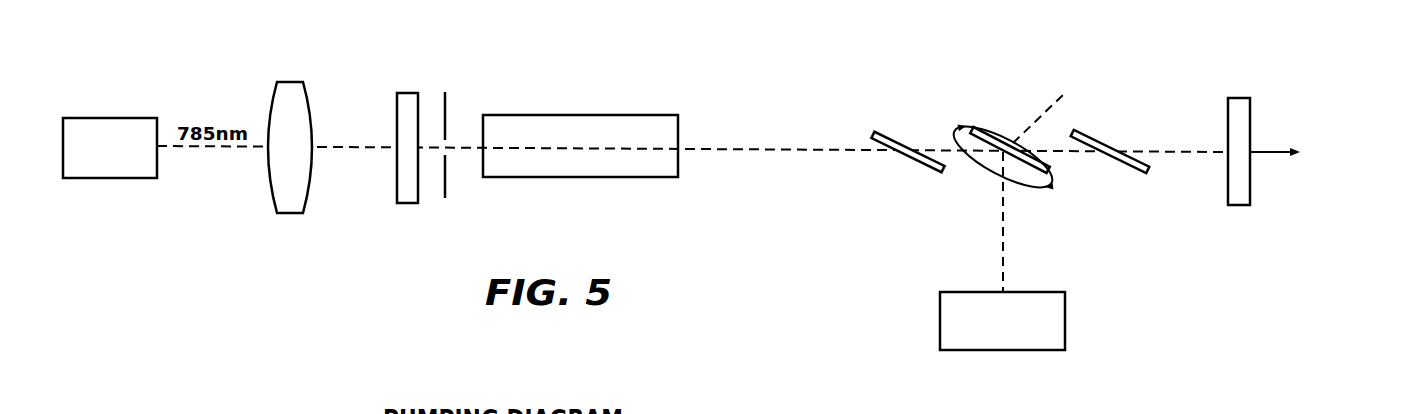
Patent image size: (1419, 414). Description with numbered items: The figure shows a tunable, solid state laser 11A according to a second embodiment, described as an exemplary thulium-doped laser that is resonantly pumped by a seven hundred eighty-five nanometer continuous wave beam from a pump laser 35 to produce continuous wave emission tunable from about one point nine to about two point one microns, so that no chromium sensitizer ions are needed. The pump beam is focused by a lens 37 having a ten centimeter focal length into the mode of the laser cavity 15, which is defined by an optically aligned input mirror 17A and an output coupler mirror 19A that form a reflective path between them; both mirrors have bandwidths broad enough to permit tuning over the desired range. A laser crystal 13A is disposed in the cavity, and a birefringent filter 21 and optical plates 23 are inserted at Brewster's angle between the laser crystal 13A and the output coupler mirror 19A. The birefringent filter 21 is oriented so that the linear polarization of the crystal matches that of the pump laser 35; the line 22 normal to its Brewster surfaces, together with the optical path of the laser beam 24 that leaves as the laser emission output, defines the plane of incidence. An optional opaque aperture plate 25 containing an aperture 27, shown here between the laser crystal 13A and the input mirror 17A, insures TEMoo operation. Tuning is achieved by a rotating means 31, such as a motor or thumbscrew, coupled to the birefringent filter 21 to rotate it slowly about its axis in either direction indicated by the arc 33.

The tunable solid state laser 11A is at (810, 31).
The laser crystal 13A is at (661, 115).
The laser cavity 15 is at (835, 101).
The input mirror 17A is at (405, 93).
The output coupler mirror 19A is at (1240, 98).
The birefringent filter 21 is at (994, 130).
The line normal to Brewster surfaces 22 is at (1058, 101).
The optical plates 23 is at (909, 164).
The laser beam 24 is at (1195, 149).
The aperture plate 25 is at (446, 98).
The aperture 27 is at (451, 160).
The rotating means 31 is at (1065, 317).
The arc 33 is at (1035, 188).
The pump laser 35 is at (99, 118).
The lens 37 is at (280, 83).